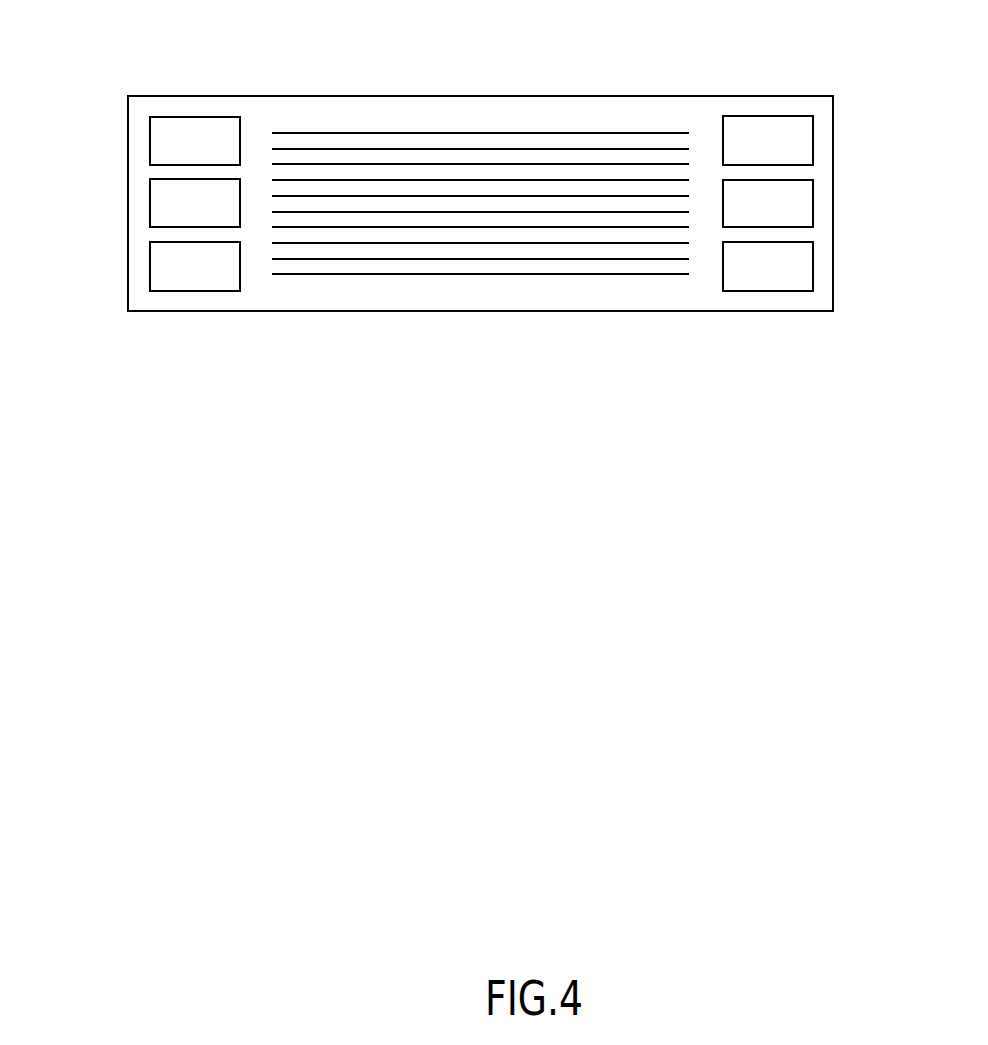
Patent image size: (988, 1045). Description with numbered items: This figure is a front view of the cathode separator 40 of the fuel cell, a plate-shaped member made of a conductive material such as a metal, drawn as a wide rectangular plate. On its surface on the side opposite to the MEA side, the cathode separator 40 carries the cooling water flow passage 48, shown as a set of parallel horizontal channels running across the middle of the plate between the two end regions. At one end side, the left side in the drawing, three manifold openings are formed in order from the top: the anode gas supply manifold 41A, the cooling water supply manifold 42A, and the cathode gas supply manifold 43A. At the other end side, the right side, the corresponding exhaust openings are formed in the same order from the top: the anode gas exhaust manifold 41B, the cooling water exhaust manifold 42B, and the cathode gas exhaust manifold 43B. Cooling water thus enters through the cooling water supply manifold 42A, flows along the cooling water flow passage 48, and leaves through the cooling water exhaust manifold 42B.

The cathode separator 40 is at (120, 88).
The anode gas supply manifold 41A is at (150, 131).
The cooling water supply manifold 42A is at (150, 196).
The cathode gas supply manifold 43A is at (150, 260).
The anode gas exhaust manifold 41B is at (813, 146).
The cooling water exhaust manifold 42B is at (813, 211).
The cathode gas exhaust manifold 43B is at (813, 273).
The cooling water flow passage 48 is at (465, 274).